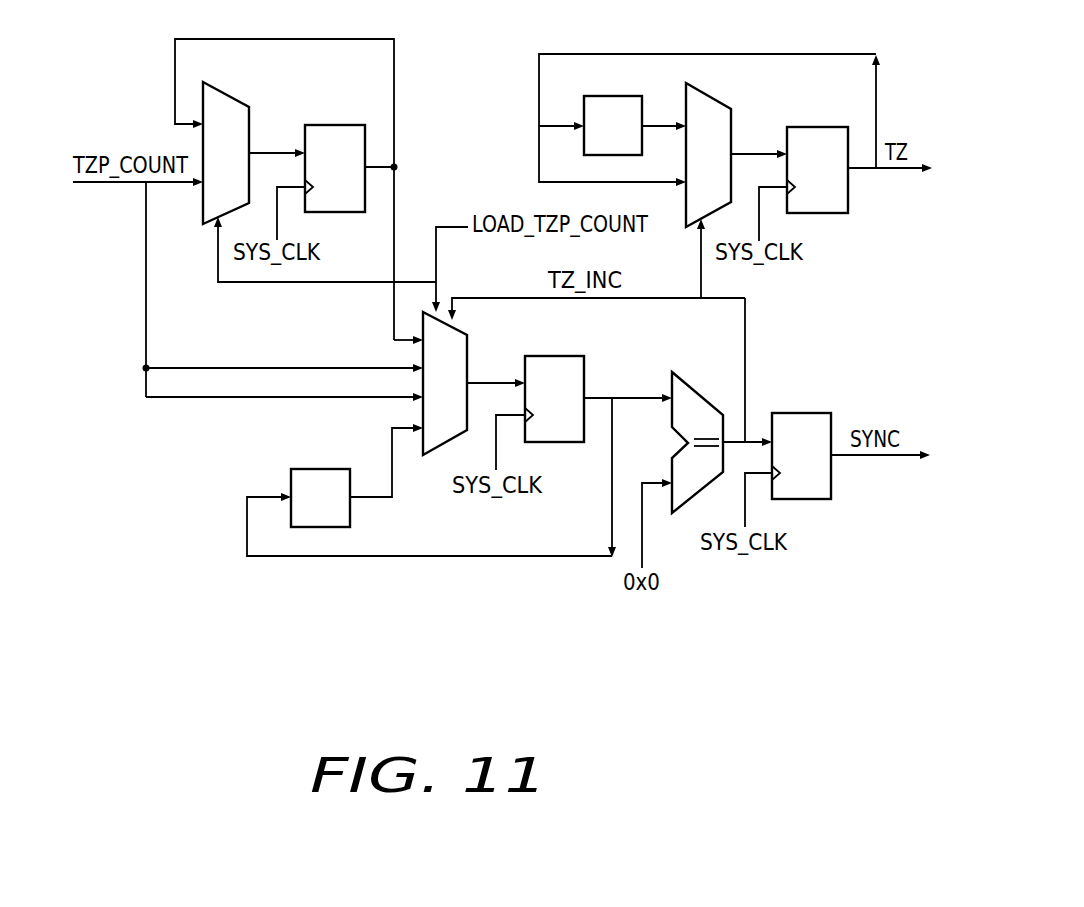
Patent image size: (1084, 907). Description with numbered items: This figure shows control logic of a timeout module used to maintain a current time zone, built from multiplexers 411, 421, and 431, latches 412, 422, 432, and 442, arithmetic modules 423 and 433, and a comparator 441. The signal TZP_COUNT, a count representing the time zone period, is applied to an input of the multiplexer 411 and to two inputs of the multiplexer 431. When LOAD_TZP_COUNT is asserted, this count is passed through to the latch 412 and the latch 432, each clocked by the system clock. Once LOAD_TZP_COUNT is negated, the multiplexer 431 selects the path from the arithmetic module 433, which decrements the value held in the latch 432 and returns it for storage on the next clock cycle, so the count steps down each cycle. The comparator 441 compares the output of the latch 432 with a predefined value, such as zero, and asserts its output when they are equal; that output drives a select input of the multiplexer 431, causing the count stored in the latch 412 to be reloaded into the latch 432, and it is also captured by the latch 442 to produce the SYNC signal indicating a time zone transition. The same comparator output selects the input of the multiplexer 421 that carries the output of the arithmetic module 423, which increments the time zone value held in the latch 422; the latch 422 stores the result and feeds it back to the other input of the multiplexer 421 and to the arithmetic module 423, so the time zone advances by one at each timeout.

The multiplexer 411 is at (232, 98).
The latch 412 is at (335, 125).
The multiplexer 421 is at (713, 97).
The latch 422 is at (820, 126).
The arithmetic module 423 is at (622, 96).
The multiplexer 431 is at (467, 349).
The latch 432 is at (573, 356).
The arithmetic module 433 is at (336, 469).
The comparator 441 is at (686, 384).
The latch 442 is at (812, 413).